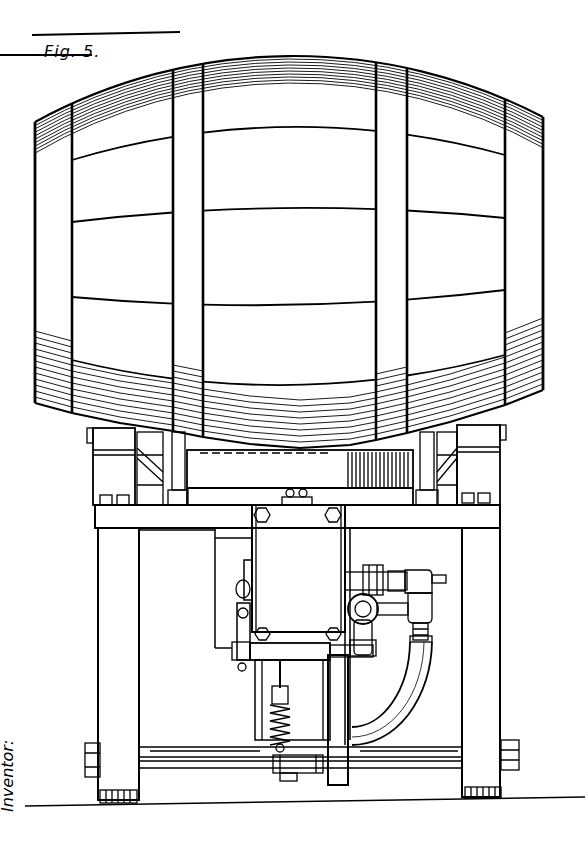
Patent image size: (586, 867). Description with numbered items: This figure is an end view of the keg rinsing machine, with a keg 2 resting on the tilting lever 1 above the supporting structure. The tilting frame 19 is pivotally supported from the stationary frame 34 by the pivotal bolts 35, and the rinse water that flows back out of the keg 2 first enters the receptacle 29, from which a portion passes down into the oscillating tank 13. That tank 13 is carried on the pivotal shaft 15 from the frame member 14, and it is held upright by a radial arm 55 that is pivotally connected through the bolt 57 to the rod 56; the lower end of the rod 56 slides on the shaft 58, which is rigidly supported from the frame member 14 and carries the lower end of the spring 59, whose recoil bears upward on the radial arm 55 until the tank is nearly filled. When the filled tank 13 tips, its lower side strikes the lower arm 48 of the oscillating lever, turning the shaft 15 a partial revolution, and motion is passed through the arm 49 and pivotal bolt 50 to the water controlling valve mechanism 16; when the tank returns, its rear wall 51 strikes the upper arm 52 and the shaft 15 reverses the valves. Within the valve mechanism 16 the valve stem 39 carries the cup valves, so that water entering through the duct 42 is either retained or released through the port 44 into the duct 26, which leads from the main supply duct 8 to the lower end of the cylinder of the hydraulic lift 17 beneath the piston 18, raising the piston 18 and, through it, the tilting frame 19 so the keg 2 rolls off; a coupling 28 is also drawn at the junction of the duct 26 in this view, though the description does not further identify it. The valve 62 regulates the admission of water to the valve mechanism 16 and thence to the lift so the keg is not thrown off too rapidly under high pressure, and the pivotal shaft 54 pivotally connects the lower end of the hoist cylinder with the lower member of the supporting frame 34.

The tilting lever 1 is at (300, 477).
The keg 2 is at (289, 252).
The duct 8 is at (236, 589).
The oscillating tank 13 is at (223, 638).
The frame member 14 is at (350, 778).
The pivotal shaft 15 is at (233, 658).
The water controlling valve mechanism 16 is at (325, 576).
The hydraulic lift 17 is at (256, 720).
The piston 18 is at (258, 690).
The tilting frame 19 is at (150, 475).
The duct 26 is at (392, 693).
The coupling 28 is at (432, 630).
The receptacle 29 is at (360, 494).
The stationary frame 34 is at (520, 536).
The pivotal bolts 35 is at (90, 435).
The valve stem 39 is at (350, 600).
The duct 42 is at (430, 602).
The port 44 is at (432, 612).
The lower arm of oscillating lever 48 is at (240, 671).
The arm 49 is at (373, 660).
The pivotal bolt 50 is at (355, 613).
The rear wall 51 is at (225, 615).
The upper arm of oscillating lever 52 is at (240, 622).
The pivotal shaft 54 is at (255, 770).
The radial arm 55 is at (281, 674).
The rod 56 is at (286, 718).
The bolt 57 is at (291, 690).
The shaft 58 is at (308, 776).
The spring 59 is at (272, 737).
The valve 62 is at (440, 576).